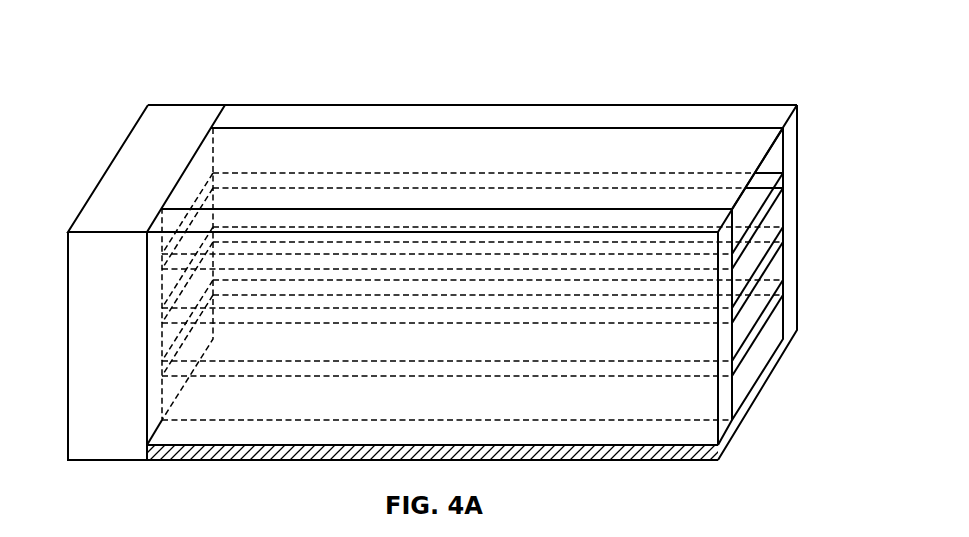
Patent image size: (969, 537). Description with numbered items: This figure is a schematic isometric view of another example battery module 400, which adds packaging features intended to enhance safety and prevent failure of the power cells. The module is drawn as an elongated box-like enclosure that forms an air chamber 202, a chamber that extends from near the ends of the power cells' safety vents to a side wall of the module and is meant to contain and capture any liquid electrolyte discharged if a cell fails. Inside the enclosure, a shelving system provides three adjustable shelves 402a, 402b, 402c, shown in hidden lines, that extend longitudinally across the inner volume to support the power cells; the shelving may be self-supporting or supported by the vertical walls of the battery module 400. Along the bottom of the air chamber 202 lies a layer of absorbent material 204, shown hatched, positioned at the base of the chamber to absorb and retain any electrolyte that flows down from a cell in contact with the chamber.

The battery module 400 is at (146, 50).
The air chamber 202 is at (773, 110).
The adjustable shelf 402a is at (782, 187).
The adjustable shelf 402b is at (782, 240).
The adjustable shelf 402c is at (782, 294).
The absorbent material 204 is at (692, 456).